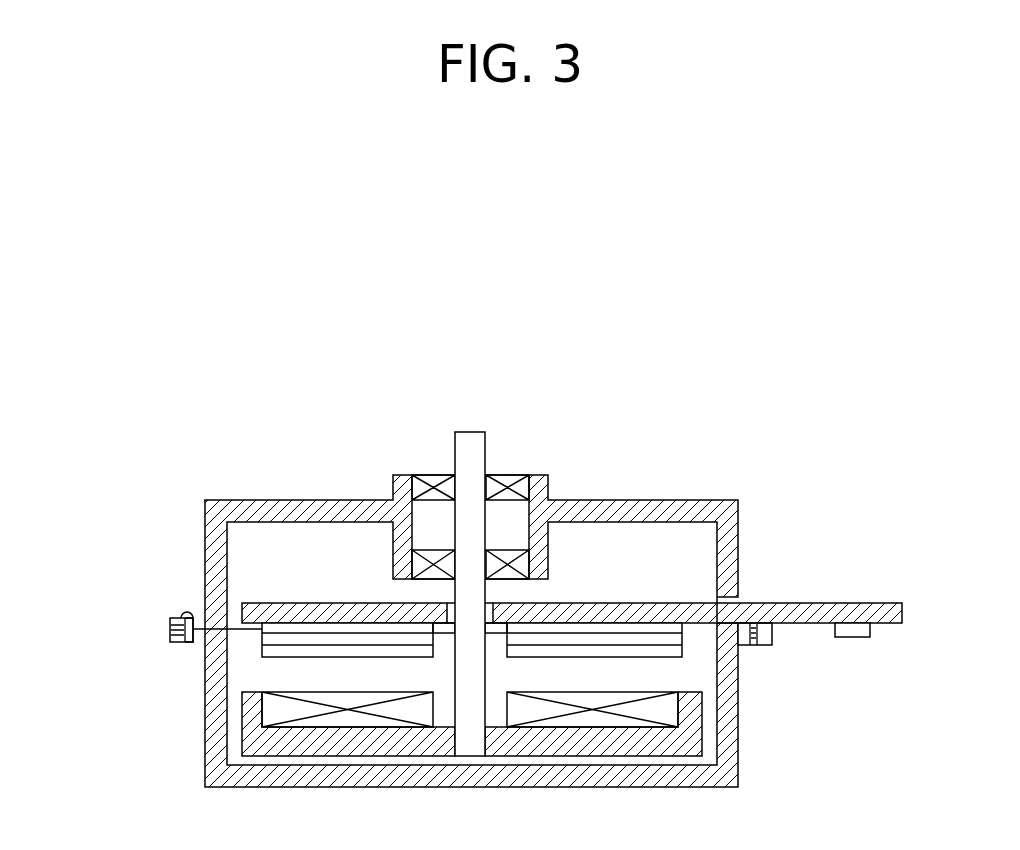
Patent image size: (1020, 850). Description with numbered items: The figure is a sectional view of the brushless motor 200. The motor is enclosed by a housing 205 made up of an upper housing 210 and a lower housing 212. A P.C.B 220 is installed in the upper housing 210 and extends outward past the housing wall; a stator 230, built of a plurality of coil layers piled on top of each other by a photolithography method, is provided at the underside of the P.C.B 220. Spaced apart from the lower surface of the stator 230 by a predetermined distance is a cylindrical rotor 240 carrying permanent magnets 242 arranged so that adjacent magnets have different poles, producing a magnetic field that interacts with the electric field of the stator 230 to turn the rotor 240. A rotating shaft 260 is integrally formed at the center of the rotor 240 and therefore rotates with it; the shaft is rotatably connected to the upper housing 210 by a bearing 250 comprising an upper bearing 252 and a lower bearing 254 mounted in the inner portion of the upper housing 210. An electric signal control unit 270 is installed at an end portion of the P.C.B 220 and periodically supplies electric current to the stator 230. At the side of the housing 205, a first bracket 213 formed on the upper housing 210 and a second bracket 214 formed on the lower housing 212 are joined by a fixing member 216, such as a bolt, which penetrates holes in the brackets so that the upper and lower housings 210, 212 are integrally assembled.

The brushless motor 200 is at (530, 213).
The housing 205 is at (803, 347).
The upper housing 210 is at (655, 505).
The lower housing 212 is at (727, 730).
The first bracket 213 is at (175, 626).
The nut 214 is at (175, 636).
The fixing member 216 is at (185, 608).
The P.C.B 220 is at (310, 608).
The stator 230 is at (293, 659).
The rotor 240 is at (290, 741).
The permanent magnets 242 is at (288, 707).
The bearing 250 is at (617, 347).
The upper bearing 252 is at (493, 487).
The lower bearing 254 is at (508, 555).
The rotating shaft 260 is at (471, 447).
The electric signal control unit 270 is at (853, 640).